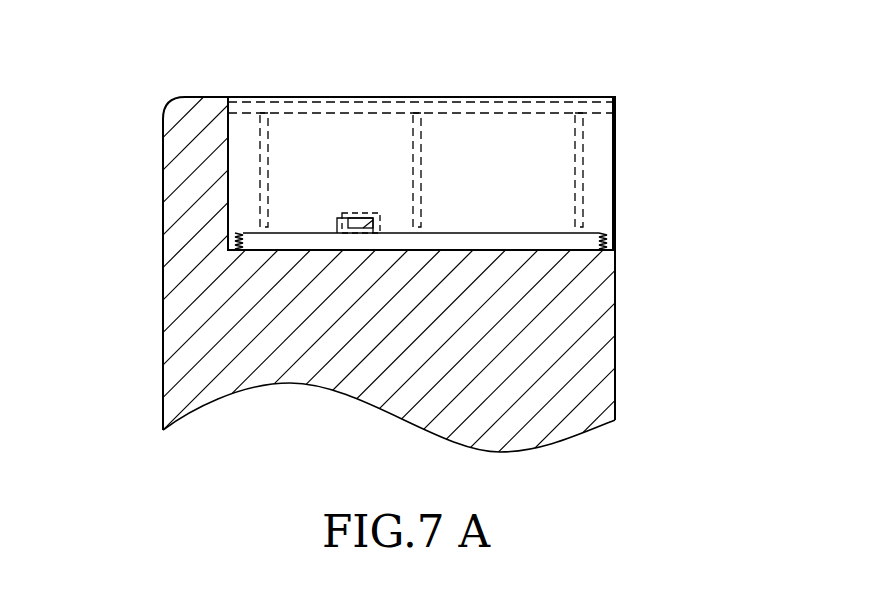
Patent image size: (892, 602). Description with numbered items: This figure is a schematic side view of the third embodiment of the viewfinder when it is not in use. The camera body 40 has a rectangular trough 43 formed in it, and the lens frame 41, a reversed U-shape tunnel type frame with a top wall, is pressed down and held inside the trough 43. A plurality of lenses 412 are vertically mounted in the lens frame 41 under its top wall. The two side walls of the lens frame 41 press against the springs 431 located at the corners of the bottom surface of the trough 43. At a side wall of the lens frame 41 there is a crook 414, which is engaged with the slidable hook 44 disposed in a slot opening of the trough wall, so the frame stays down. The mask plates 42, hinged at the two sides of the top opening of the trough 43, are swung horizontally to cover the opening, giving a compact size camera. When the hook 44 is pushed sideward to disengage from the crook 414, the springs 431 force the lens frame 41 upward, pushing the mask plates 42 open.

The camera body 40 is at (178, 335).
The lens frame 41 is at (304, 102).
The mask plates 42 is at (512, 100).
The lenses 412 is at (415, 158).
The crook 414 is at (337, 217).
The hook 44 is at (368, 212).
The trough 43 is at (553, 243).
The springs 431 is at (234, 240).